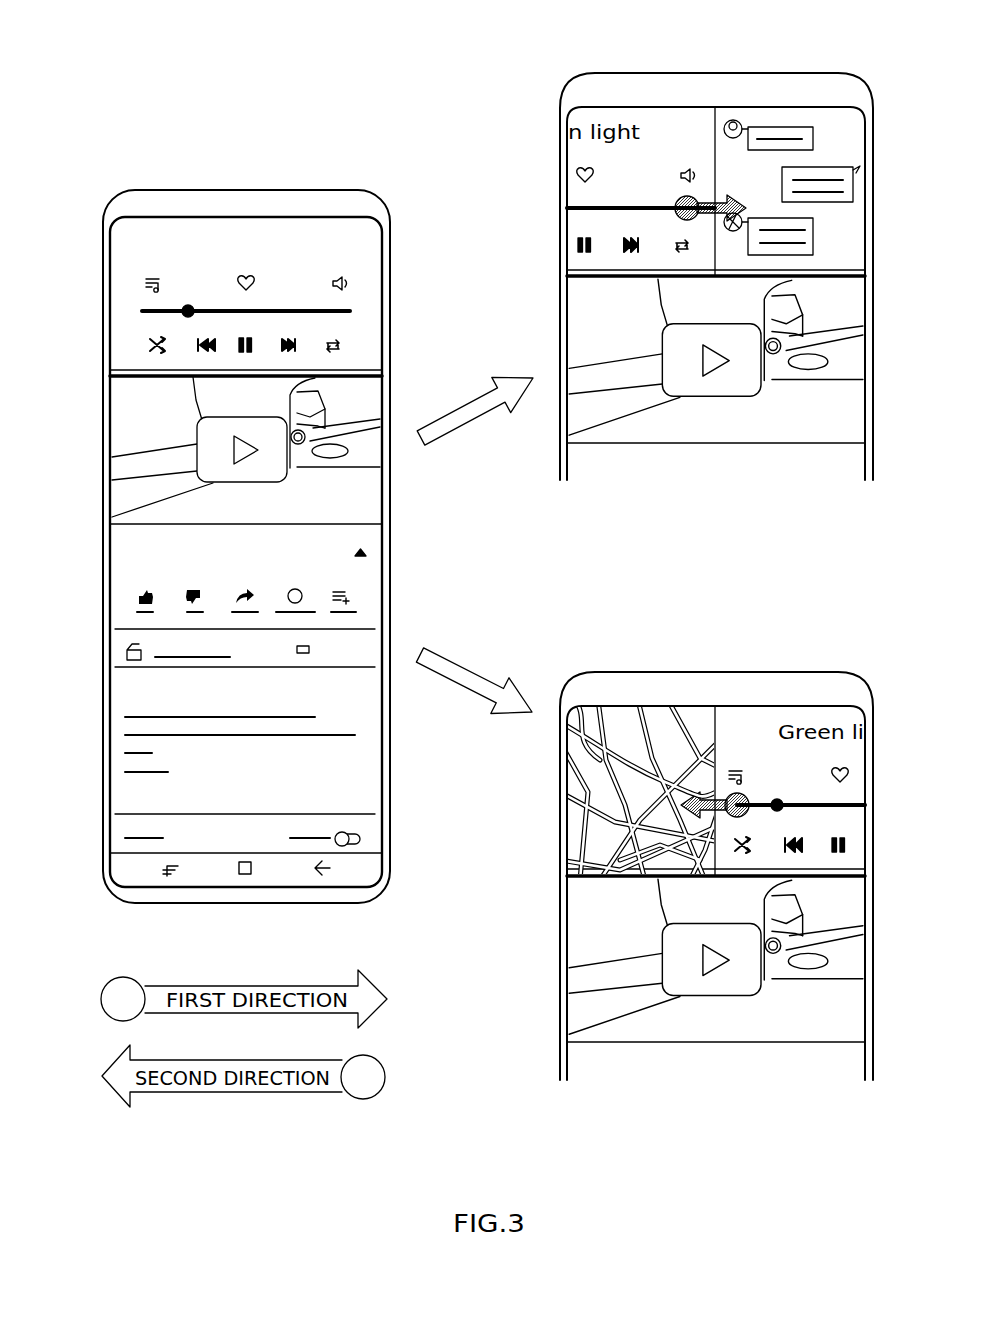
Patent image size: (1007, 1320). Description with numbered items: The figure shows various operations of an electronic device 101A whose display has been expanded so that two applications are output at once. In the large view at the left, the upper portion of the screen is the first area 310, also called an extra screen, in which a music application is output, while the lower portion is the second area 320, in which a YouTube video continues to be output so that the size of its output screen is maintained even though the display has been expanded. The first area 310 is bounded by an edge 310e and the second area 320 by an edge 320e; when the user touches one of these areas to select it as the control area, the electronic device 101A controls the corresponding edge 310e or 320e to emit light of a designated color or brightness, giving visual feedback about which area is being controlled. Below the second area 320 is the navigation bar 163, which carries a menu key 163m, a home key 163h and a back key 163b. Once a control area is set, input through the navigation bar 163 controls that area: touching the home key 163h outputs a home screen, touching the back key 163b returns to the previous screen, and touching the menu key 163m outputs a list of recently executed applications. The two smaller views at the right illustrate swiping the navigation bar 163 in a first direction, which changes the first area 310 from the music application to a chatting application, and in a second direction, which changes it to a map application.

The electronic device 101A is at (245, 190).
The first area 310 is at (87, 219).
The edge of the first area 310e is at (385, 296).
The second area 320 is at (87, 378).
The edge of the second area 320e is at (385, 580).
The navigation bar 163 is at (372, 868).
The menu key 163m is at (170, 878).
The home key 163h is at (245, 876).
The back key 163b is at (322, 878).